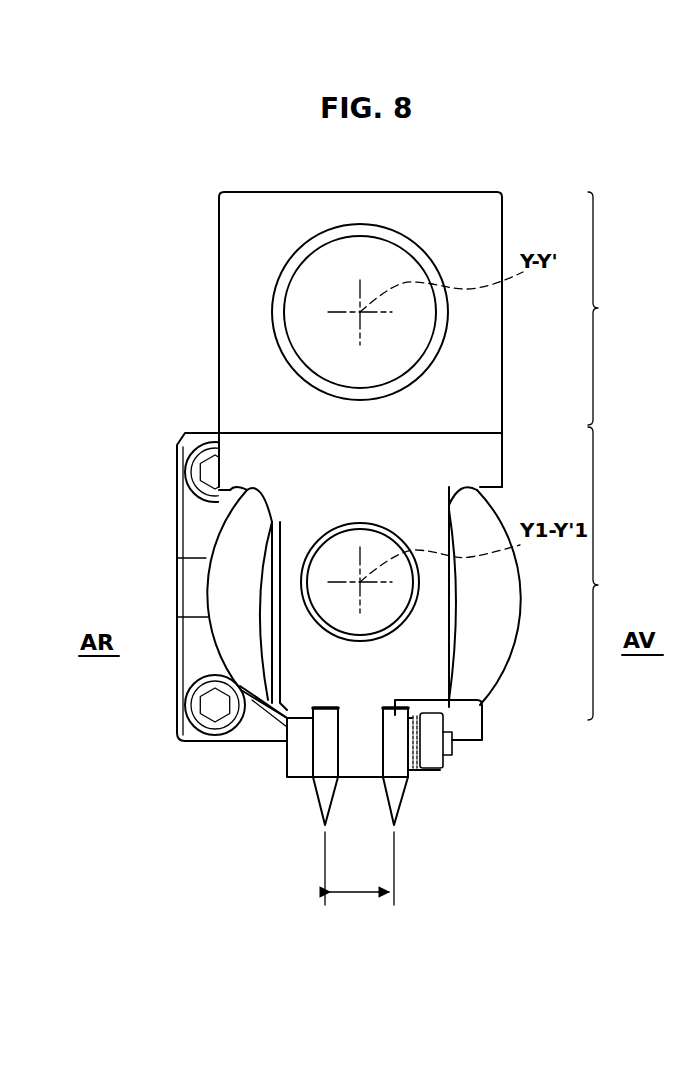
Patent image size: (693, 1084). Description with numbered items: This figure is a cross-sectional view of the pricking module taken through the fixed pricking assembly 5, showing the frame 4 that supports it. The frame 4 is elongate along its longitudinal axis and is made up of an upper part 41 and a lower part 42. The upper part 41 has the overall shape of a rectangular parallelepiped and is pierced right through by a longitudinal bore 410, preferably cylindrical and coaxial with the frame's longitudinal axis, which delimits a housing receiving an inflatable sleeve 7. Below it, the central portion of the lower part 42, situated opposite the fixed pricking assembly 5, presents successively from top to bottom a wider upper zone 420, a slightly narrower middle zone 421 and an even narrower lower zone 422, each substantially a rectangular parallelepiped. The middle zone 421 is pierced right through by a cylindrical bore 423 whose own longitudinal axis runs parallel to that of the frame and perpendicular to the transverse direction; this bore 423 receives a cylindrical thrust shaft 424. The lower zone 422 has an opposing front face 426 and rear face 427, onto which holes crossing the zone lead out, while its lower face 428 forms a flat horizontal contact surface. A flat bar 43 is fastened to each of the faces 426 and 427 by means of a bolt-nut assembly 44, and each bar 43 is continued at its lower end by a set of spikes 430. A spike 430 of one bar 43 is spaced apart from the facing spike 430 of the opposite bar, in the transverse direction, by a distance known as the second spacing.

The frame 4 is at (166, 336).
The fixed pricking assembly 5 is at (246, 808).
The inflatable sleeve 7 is at (311, 298).
The upper part 41 is at (609, 308).
The lower part 42 is at (609, 573).
The flat bar 43 is at (327, 724).
The bolt-nut assembly 44 is at (428, 742).
The longitudinal bore 410 is at (362, 226).
The upper zone 420 is at (487, 460).
The middle zone 421 is at (379, 673).
The lower zone 422 is at (379, 749).
The cylindrical bore 423 is at (303, 580).
The cylindrical thrust shaft 424 is at (327, 566).
The front face 426 is at (394, 752).
The rear face 427 is at (326, 752).
The lower face 428 is at (362, 784).
The spikes 430 is at (398, 795).